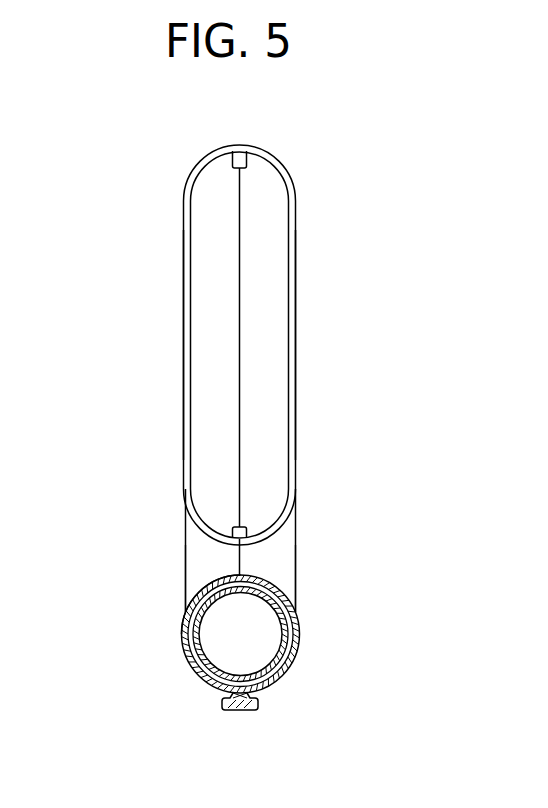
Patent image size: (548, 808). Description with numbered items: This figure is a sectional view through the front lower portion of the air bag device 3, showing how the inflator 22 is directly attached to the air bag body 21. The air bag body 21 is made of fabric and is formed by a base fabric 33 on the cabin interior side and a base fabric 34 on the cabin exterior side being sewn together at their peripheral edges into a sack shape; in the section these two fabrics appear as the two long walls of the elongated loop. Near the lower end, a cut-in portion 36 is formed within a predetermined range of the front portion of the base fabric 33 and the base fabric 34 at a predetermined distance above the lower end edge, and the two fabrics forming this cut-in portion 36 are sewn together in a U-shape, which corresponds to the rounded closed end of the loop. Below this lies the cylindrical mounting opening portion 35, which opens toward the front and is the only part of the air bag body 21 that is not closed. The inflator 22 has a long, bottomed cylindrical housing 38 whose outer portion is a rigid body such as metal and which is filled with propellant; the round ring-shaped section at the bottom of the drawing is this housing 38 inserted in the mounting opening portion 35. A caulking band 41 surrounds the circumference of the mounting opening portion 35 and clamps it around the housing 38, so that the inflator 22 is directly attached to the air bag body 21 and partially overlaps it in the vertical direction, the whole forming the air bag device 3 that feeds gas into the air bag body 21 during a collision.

The heat exchanger tube assembly 3 is at (323, 186).
The air bag body 21 is at (186, 171).
The inflator 22 is at (197, 676).
The base fabric 33 is at (184, 309).
The base fabric 34 is at (296, 310).
The mounting opening portion 35 is at (302, 620).
The cut-in portion 36 is at (265, 560).
The housing 38 is at (188, 619).
The caulking band 41 is at (293, 661).